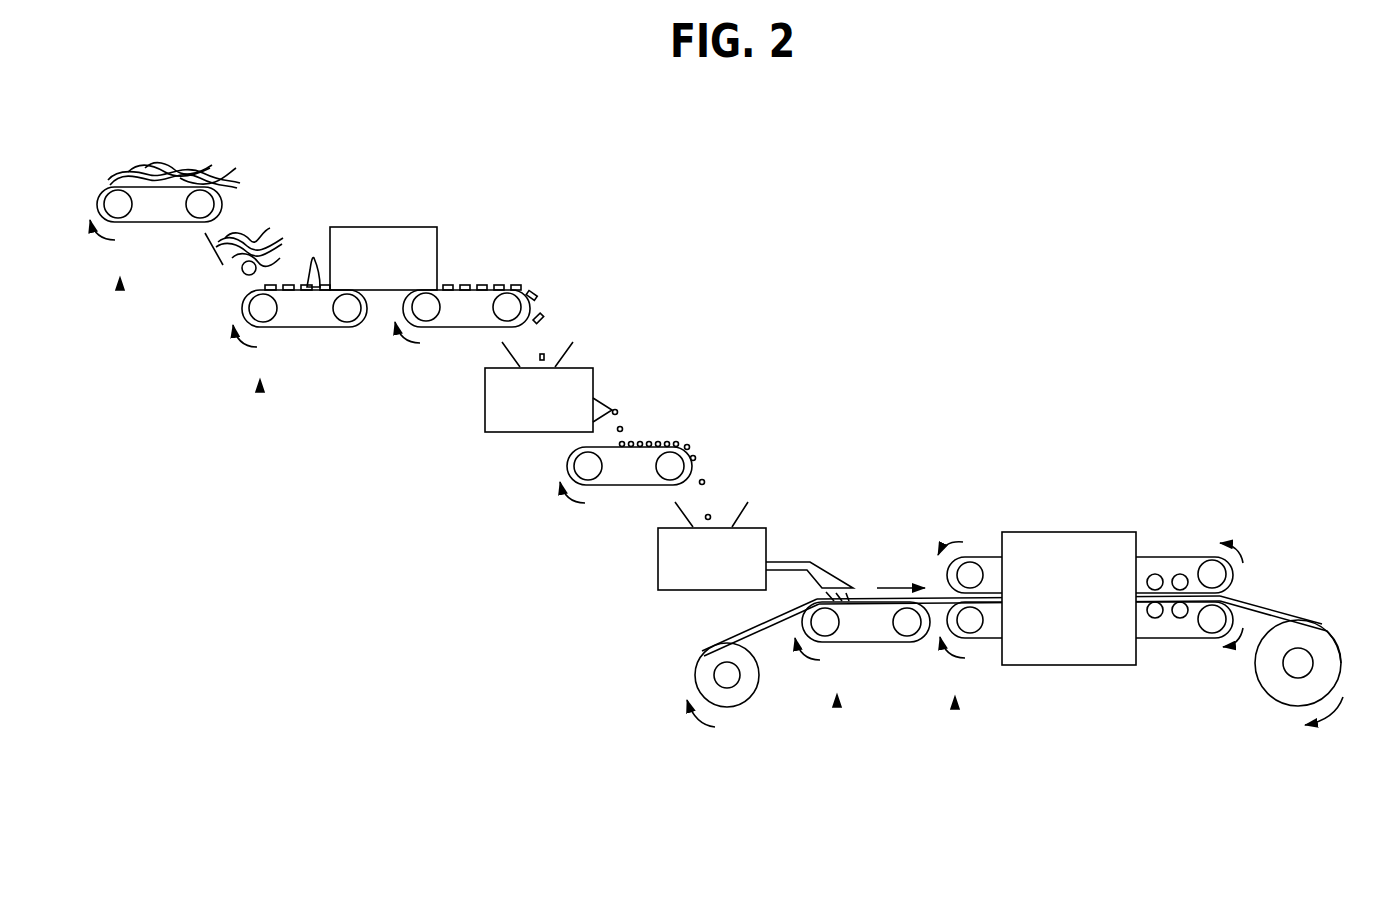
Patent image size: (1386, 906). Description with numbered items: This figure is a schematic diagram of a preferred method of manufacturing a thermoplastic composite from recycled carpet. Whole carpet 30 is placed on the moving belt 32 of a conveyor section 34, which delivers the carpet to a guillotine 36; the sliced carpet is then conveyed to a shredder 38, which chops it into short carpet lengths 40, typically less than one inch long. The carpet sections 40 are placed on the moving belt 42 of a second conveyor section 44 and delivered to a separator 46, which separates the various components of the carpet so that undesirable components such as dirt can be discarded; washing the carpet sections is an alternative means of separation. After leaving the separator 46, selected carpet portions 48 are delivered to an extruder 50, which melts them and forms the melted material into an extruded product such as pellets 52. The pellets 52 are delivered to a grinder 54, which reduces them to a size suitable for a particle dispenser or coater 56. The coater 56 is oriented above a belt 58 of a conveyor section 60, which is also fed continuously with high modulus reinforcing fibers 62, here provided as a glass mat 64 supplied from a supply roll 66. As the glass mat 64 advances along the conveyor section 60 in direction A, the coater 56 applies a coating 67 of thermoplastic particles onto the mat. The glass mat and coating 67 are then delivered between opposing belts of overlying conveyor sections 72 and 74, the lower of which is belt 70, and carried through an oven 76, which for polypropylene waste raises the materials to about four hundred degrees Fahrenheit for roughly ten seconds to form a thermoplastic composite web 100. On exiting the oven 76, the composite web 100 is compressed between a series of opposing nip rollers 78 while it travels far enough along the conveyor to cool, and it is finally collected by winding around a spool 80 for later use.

The whole carpet 30 is at (240, 227).
The moving belt 32 is at (178, 223).
The conveyor section 34 is at (120, 278).
The guillotine 36 is at (283, 267).
The shredder 38 is at (237, 268).
The carpet lengths 40 is at (313, 259).
The moving belt 42 is at (323, 327).
The conveyor section 44 is at (260, 380).
The separator 46 is at (385, 227).
The selected carpet portions 48 is at (493, 287).
The extruder 50 is at (595, 375).
The pellets 52 is at (620, 428).
The grinder 54 is at (768, 535).
The coater 56 is at (840, 570).
The belt 58 is at (900, 642).
The conveyor section 60 is at (837, 695).
The reinforcing fibers 62 is at (787, 610).
The glass mat 64 is at (750, 628).
The supply roll 66 is at (670, 700).
The coating of thermoplastic particles 67 is at (867, 598).
The belt 70 is at (993, 640).
The conveyor section 72 is at (950, 505).
The conveyor section 74 is at (955, 697).
The oven 76 is at (1082, 530).
The nip rollers 78 is at (1180, 574).
The spool 80 is at (1223, 710).
The thermoplastic composite web 100 is at (1262, 603).